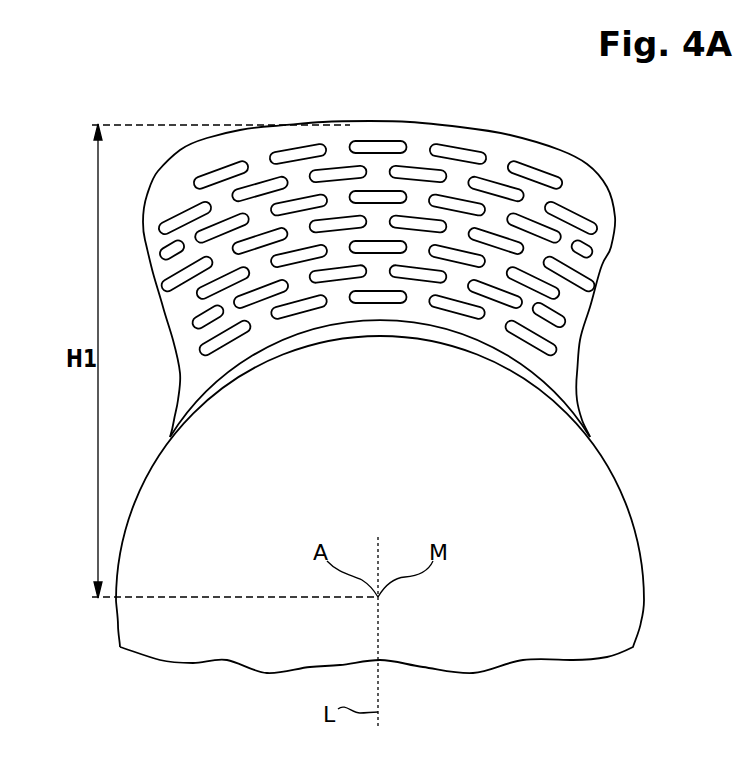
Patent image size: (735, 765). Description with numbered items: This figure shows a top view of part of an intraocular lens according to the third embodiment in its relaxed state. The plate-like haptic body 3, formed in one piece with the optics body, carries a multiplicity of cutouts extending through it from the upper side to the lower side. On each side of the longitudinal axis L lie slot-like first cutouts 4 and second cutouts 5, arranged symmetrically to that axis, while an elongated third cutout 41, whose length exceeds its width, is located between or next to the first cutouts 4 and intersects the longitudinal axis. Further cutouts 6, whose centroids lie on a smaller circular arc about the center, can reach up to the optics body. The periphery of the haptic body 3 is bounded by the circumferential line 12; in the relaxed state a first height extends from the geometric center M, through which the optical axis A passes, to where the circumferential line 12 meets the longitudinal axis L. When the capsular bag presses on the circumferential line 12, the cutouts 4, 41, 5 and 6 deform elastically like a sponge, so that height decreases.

The haptic body 3 is at (425, 496).
The first cutout 4 is at (365, 252).
The third cutout 41 is at (377, 141).
The second cutout 5 is at (334, 168).
The further cutout 6 is at (160, 248).
The circumferential line 12 is at (530, 145).